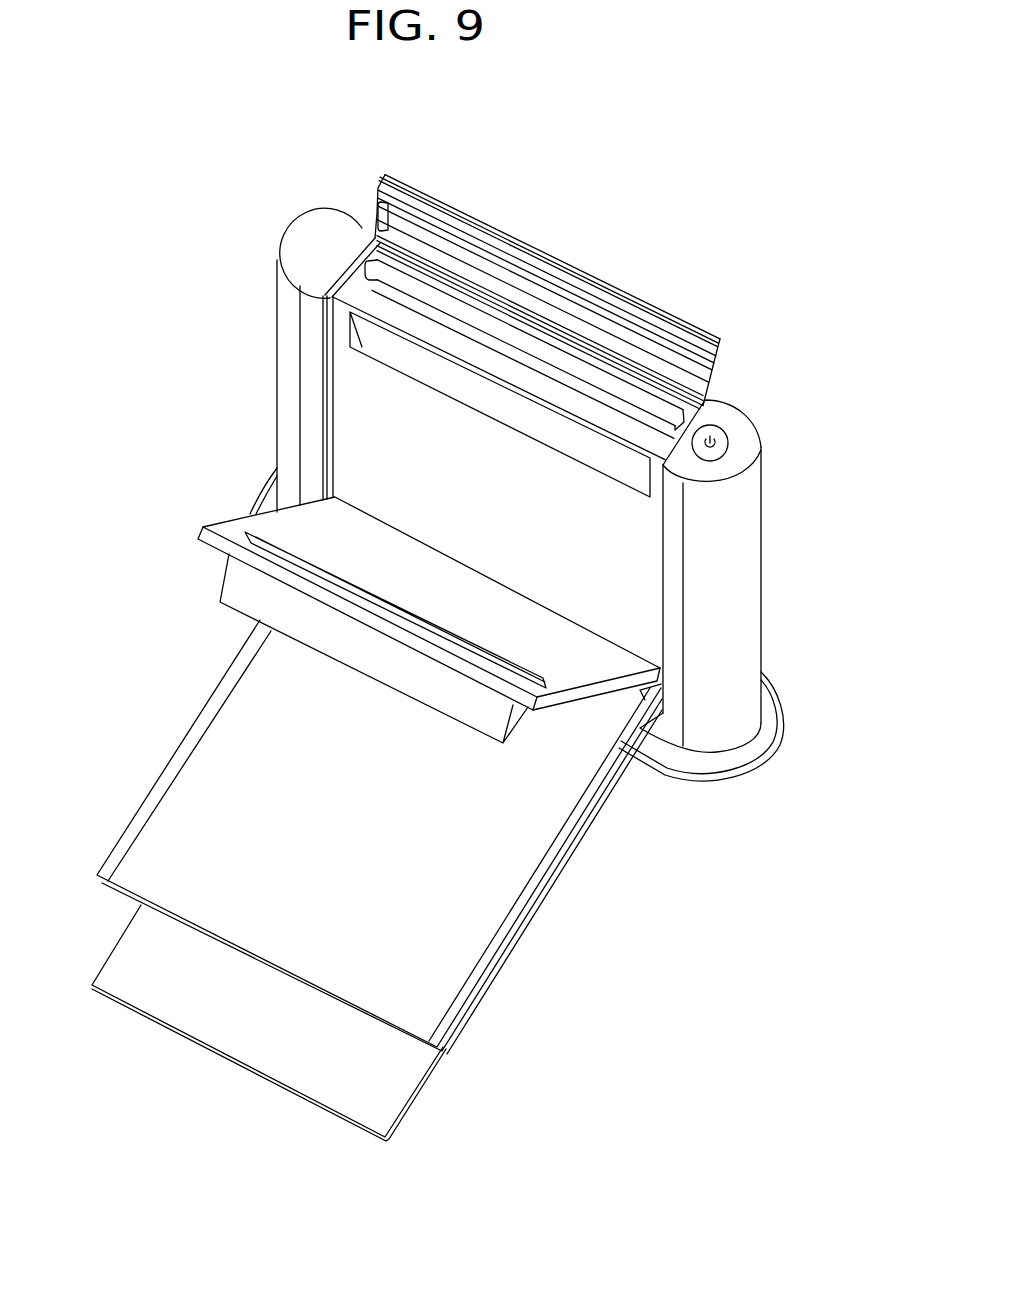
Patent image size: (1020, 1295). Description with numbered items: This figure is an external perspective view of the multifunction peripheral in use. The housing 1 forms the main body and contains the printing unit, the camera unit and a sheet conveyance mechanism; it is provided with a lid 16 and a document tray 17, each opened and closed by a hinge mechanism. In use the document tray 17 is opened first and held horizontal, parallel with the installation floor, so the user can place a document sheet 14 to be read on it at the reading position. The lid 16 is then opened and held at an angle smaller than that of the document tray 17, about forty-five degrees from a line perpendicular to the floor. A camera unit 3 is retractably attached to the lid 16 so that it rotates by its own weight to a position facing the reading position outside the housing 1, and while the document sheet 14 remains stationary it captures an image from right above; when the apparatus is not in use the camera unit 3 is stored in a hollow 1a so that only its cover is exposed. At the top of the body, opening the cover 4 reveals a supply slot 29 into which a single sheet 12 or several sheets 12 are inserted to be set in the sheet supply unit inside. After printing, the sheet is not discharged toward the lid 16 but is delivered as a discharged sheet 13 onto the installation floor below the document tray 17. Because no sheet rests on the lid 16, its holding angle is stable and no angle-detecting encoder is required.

The housing 1 is at (304, 245).
The hollow 1a is at (627, 473).
The supply slot 29 is at (367, 258).
The cover 4 is at (603, 302).
The sheet 12 is at (638, 405).
The lid 16 is at (292, 533).
The camera unit 3 is at (270, 607).
The document tray 17 is at (167, 781).
The document sheet 14 is at (456, 947).
The discharged sheet 13 is at (153, 985).